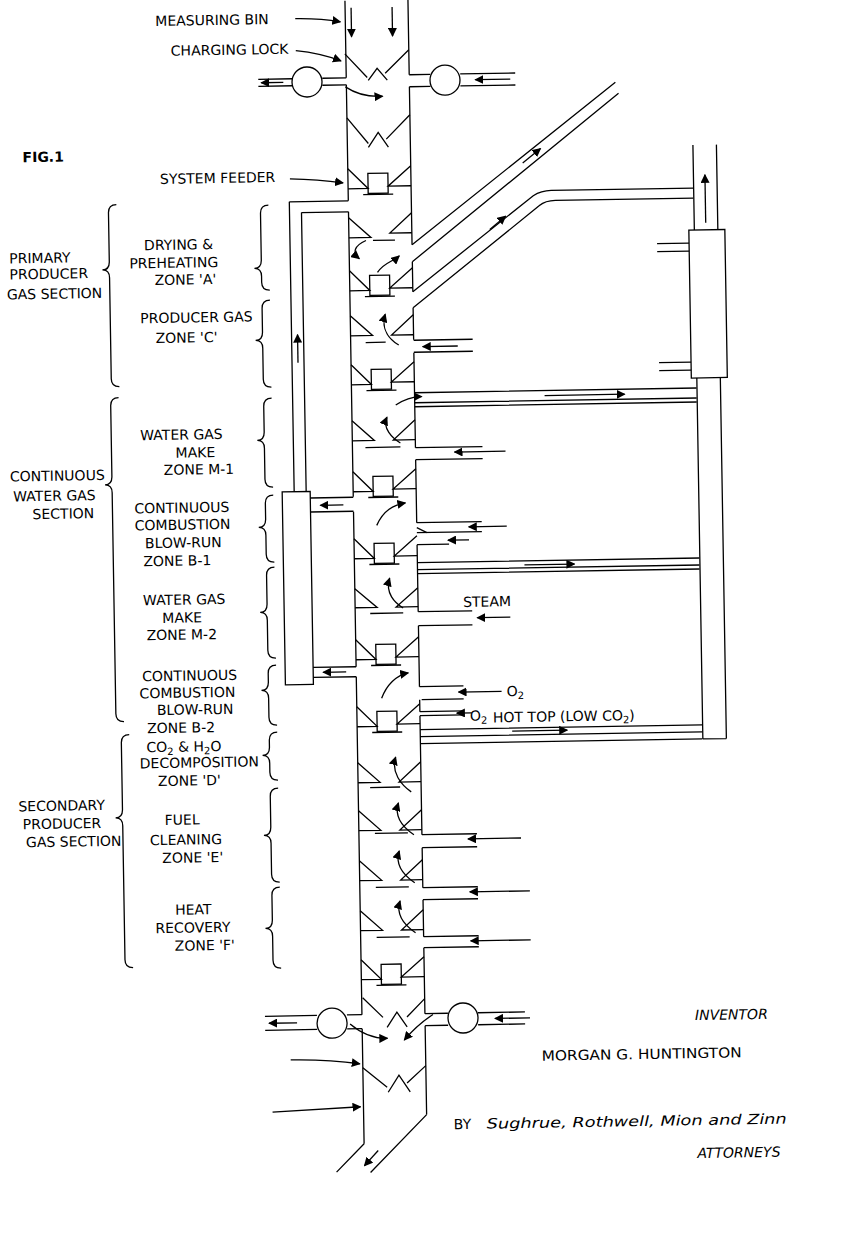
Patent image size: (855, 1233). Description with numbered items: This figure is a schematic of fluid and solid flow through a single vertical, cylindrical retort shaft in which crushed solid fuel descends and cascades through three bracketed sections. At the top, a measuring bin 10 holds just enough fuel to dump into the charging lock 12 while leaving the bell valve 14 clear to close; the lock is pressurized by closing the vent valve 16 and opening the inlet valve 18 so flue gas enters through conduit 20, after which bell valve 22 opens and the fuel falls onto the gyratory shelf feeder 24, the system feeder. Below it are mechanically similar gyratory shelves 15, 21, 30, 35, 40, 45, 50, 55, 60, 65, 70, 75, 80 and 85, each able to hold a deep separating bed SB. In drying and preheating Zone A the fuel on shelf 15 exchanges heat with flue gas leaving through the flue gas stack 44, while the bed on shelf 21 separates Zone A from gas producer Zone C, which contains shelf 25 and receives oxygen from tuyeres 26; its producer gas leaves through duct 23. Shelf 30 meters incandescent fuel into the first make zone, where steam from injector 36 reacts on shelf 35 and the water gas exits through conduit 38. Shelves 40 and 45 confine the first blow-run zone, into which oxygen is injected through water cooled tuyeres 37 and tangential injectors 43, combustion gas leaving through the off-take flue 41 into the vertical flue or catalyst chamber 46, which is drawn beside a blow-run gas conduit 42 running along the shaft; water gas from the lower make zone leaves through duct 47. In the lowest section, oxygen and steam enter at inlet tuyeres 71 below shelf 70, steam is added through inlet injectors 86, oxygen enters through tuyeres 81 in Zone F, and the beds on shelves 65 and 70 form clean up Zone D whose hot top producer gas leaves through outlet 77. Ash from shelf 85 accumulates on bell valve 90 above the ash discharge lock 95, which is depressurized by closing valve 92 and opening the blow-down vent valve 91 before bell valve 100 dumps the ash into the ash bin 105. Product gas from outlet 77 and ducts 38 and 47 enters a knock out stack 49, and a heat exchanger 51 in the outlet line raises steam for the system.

The measuring bin 10 is at (418, 33).
The charging lock 12 is at (354, 107).
The bell valve 14 is at (392, 84).
The gyratory shelf 15 is at (377, 240).
The vent valve 16 is at (303, 95).
The inlet valve 18 is at (461, 96).
The conduit 20 is at (431, 88).
The gyratory shelf 21 is at (355, 290).
The bell valve 22 is at (398, 130).
The duct 23 is at (537, 217).
The gyratory shelf feeder 24 is at (400, 172).
The gyratory shelf 25 is at (355, 340).
The tuyeres 26 is at (453, 340).
The gyratory shelf 30 is at (355, 383).
The gyrating shelf 35 is at (355, 437).
The steam injector 36 is at (450, 448).
The water cooled tuyeres 37 is at (431, 533).
The conduit 38 is at (449, 393).
The gyratory shelf 40 is at (355, 487).
The blow-run gas off-take flue 41 is at (342, 514).
The CO2 blow run gas conduit 42 is at (310, 263).
The tangential injectors 43 is at (467, 523).
The flue gas stack 44 is at (470, 205).
The gyratory shelf 45 is at (355, 556).
The vertical flue or catalyst chamber 46 is at (312, 600).
The duct 47 is at (670, 563).
The knock out stack 49 is at (700, 477).
The gyratory shelf 50 is at (349, 608).
The heat exchanger 51 is at (695, 334).
The gyratory shelf 55 is at (356, 650).
The gyratory shelf 60 is at (357, 722).
The gyratory shelf 65 is at (358, 781).
The gyratory shelf 70 is at (360, 827).
The inlet tuyeres 71 is at (440, 835).
The gyratory shelf 75 is at (360, 877).
The outlet 77 is at (437, 746).
The gyratory shelf 80 is at (359, 927).
The tuyeres 81 is at (465, 937).
The gyratory feeder shelf 85 is at (357, 970).
The inlet injectors 86 is at (440, 889).
The bell valve 90 is at (391, 1014).
The blow-down vent valve 91 is at (320, 1007).
The valve 92 is at (466, 1033).
The ash discharge lock 95 is at (420, 1067).
The bell valve 100 is at (396, 1075).
The ash bin 105 is at (388, 1134).